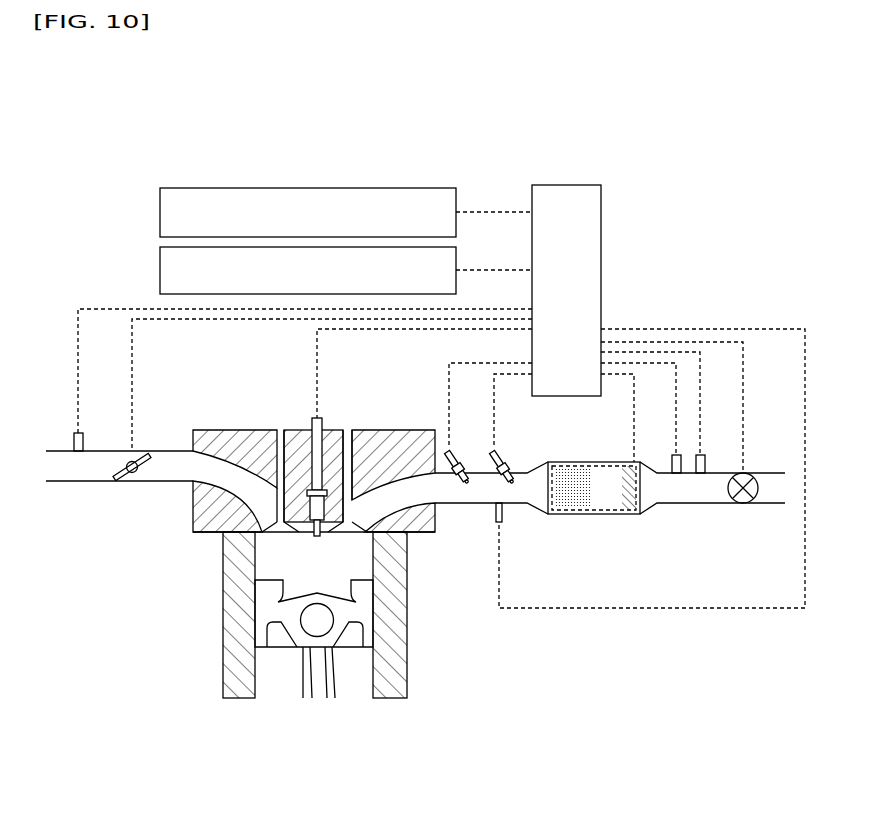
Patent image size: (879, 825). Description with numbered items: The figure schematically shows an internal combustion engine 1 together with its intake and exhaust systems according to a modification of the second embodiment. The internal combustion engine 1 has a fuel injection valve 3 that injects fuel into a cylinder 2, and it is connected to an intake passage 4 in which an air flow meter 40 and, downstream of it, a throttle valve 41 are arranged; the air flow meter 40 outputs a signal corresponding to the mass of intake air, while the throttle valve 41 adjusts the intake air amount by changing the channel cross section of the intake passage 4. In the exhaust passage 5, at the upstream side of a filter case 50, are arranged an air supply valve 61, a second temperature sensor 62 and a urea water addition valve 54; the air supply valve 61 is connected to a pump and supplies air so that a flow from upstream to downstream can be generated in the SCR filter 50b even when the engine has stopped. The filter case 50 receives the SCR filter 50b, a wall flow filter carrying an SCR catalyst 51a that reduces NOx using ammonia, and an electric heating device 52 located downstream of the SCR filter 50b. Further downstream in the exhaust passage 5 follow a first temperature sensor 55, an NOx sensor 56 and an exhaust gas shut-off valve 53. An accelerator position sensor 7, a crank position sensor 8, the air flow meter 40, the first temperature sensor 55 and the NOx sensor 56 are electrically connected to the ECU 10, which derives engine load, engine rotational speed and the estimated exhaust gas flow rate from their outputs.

The internal combustion engine 1 is at (206, 585).
The cylinder 2 is at (368, 549).
The fuel injection valve 3 is at (312, 421).
The intake passage 4 is at (92, 483).
The exhaust passage 5 is at (462, 505).
The accelerator position sensor 7 is at (160, 212).
The crank position sensor 8 is at (160, 269).
The ECU 10 is at (602, 243).
The air flow meter 40 is at (74, 437).
The throttle valve 41 is at (148, 456).
The filter case 50 is at (590, 513).
The SCR filter 50b is at (575, 513).
The SCR catalyst 51a is at (588, 512).
The electric heating device 52 is at (630, 514).
The exhaust gas shut-off valve 53 is at (748, 476).
The urea water addition valve 54 is at (503, 456).
The first temperature sensor 55 is at (673, 455).
The NOx sensor 56 is at (702, 455).
The air supply valve 61 is at (457, 456).
The second temperature sensor 62 is at (497, 522).